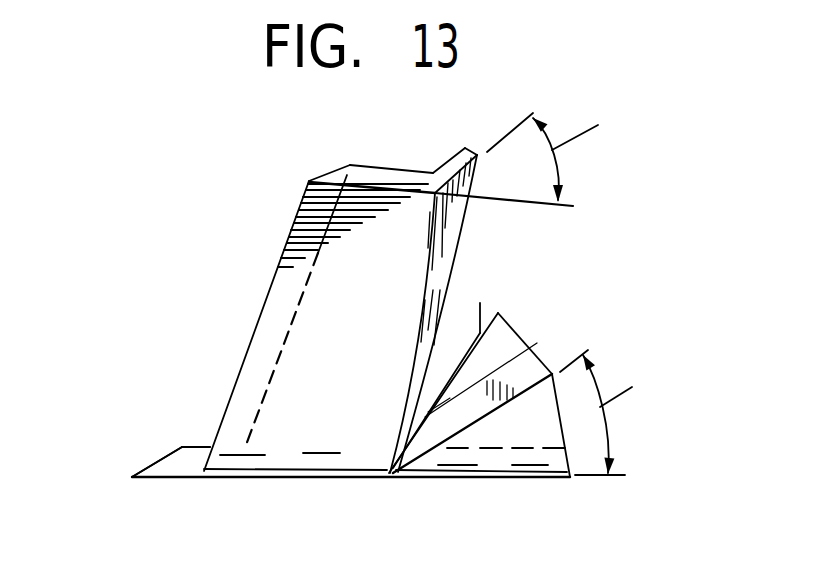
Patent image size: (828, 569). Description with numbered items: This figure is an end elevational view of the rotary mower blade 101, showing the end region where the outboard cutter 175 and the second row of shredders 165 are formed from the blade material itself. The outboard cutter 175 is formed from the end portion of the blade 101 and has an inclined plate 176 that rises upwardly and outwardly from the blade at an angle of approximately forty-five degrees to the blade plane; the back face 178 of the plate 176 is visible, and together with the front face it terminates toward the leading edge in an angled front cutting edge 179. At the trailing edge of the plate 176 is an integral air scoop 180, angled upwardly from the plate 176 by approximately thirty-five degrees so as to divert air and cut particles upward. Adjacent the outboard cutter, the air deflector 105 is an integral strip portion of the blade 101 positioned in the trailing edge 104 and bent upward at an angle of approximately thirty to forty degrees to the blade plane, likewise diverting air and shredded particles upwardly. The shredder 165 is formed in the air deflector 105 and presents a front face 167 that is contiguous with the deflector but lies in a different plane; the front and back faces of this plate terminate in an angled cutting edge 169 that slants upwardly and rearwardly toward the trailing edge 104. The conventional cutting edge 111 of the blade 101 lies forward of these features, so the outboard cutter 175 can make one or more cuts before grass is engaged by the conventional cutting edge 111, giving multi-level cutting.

The blade 101 is at (168, 302).
The trailing edge 104 is at (570, 468).
The air deflector 105 is at (483, 425).
The conventional cutting edge 111 is at (156, 462).
The shredder 165 is at (545, 318).
The front face 167 is at (502, 350).
The angled cutting edge 169 is at (480, 303).
The outboard cutter 175 is at (275, 213).
The inclined plate 176 is at (382, 173).
The back face 178 is at (312, 400).
The angled front cutting edge 179 is at (270, 300).
The air scoop 180 is at (456, 218).